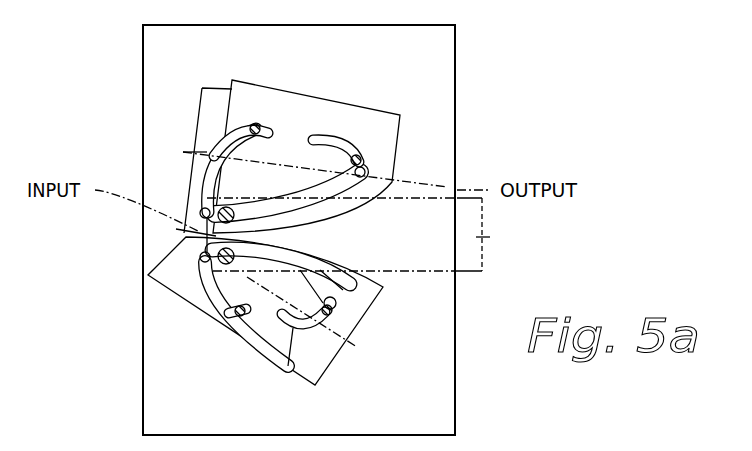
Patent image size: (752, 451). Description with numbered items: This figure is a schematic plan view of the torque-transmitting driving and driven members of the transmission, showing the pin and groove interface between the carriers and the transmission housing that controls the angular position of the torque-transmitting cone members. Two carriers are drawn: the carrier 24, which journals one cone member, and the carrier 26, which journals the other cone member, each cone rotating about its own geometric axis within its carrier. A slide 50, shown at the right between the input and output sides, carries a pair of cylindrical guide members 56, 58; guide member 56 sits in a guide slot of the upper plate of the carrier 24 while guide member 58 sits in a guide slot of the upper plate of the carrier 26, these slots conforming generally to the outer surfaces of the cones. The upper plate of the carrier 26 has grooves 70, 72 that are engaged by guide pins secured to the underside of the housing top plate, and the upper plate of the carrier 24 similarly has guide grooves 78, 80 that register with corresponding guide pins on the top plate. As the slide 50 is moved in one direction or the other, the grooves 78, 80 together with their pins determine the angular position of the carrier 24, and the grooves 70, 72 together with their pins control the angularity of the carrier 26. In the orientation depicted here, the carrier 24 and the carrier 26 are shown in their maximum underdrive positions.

The carrier 24 is at (162, 289).
The carrier 26 is at (385, 110).
The slide 50 is at (490, 240).
The cylindrical guide member 56 is at (200, 262).
The cylindrical guide member 58 is at (200, 206).
The groove 70 is at (357, 160).
The groove 72 is at (267, 128).
The guide groove 78 is at (285, 372).
The guide groove 80 is at (200, 305).